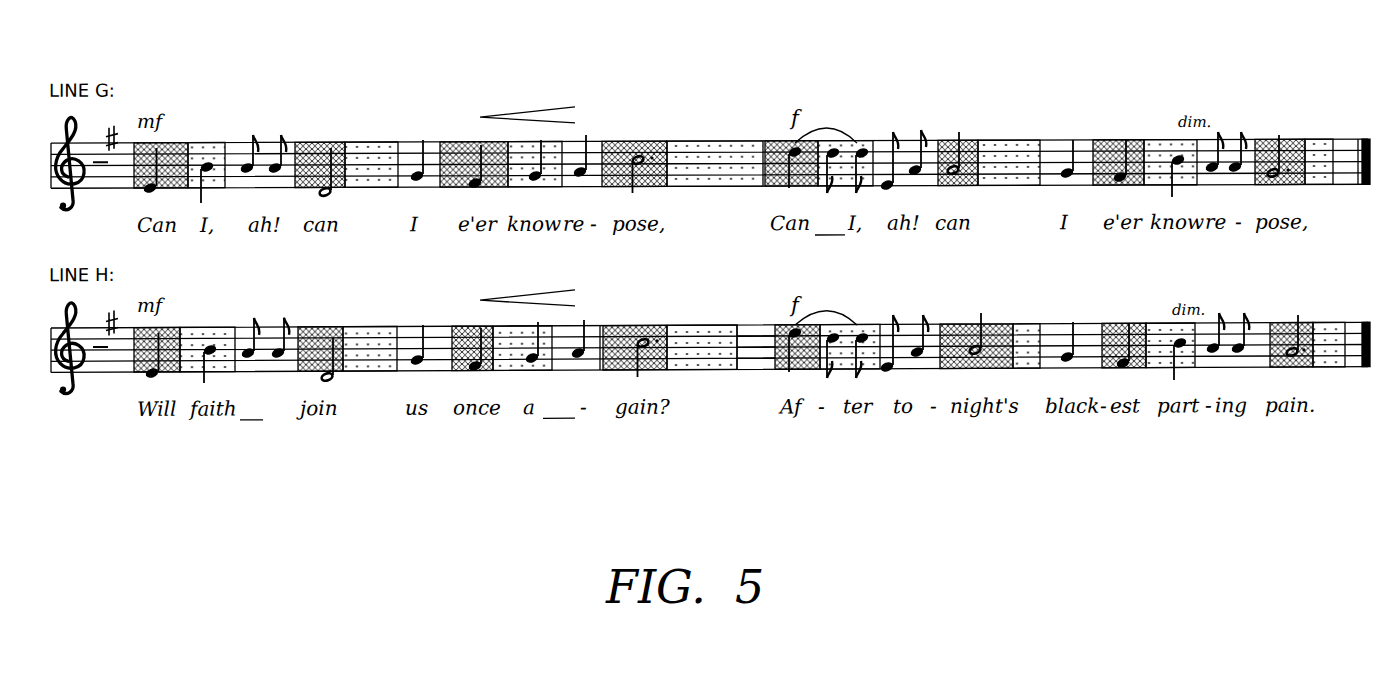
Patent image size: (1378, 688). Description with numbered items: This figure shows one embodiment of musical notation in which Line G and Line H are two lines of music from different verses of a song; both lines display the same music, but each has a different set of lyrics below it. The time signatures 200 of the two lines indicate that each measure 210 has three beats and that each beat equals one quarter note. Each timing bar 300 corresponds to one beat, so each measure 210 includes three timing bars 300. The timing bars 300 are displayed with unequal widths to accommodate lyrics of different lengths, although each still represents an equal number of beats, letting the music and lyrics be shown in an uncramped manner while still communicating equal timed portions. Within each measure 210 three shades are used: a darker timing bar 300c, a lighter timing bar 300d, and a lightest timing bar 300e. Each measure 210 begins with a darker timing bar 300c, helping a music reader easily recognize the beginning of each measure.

The time signature 200 is at (105, 193).
The measure 210 is at (1255, 120).
The timing bar 300 is at (1058, 143).
The darker timing bar 300c is at (663, 373).
The lighter timing bar 300d is at (710, 373).
The lightest timing bar 300e is at (748, 365).